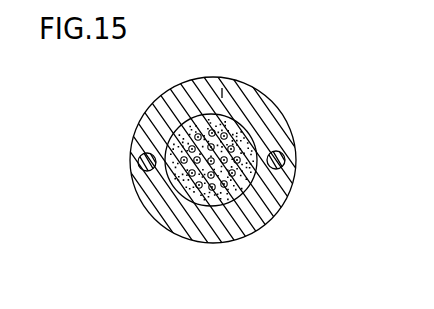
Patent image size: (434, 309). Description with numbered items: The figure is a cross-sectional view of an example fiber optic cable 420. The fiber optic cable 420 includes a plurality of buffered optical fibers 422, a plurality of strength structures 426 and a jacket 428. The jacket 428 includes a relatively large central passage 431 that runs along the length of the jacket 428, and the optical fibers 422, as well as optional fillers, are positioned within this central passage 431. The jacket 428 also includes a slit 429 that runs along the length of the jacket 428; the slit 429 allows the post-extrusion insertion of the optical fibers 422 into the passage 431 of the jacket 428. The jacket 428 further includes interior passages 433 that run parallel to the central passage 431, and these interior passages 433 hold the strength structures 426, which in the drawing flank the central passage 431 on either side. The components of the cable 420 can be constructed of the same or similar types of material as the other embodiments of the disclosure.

The fiber optic cable 420 is at (318, 88).
The buffered optical fibers 422 is at (238, 145).
The strength structures 426 is at (137, 163).
The jacket 428 is at (250, 235).
The slit 429 is at (210, 113).
The central passage 431 is at (257, 178).
The interior passages 433 is at (142, 170).